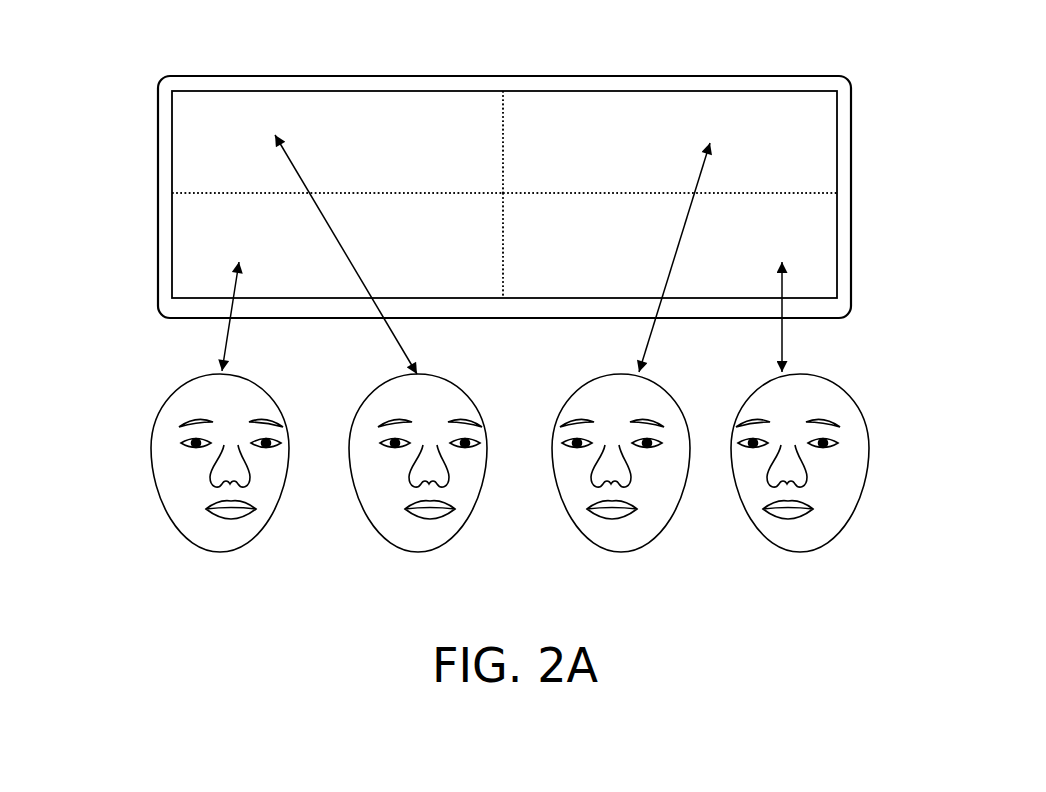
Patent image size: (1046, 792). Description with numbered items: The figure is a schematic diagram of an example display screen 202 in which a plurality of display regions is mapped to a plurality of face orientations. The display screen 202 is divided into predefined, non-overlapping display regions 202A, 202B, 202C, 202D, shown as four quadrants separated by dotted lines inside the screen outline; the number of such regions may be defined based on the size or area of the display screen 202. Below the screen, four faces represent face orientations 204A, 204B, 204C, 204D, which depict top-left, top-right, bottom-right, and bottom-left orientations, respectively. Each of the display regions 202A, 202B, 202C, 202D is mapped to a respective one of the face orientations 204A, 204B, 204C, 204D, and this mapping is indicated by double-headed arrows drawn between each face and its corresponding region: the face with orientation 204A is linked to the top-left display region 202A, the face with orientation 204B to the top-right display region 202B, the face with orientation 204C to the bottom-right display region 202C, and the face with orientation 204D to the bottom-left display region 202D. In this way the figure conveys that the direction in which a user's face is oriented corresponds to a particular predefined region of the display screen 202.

The display screen 202 is at (810, 76).
The display region 202A is at (192, 119).
The display region 202B is at (812, 126).
The display region 202C is at (812, 260).
The display region 202D is at (192, 249).
The face orientation 204A is at (450, 380).
The face orientation 204B is at (665, 383).
The face orientation 204C is at (828, 380).
The face orientation 204D is at (258, 388).